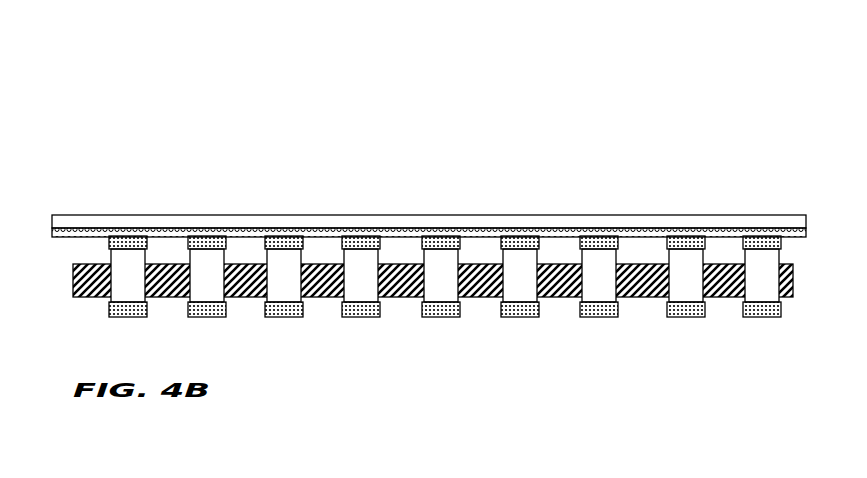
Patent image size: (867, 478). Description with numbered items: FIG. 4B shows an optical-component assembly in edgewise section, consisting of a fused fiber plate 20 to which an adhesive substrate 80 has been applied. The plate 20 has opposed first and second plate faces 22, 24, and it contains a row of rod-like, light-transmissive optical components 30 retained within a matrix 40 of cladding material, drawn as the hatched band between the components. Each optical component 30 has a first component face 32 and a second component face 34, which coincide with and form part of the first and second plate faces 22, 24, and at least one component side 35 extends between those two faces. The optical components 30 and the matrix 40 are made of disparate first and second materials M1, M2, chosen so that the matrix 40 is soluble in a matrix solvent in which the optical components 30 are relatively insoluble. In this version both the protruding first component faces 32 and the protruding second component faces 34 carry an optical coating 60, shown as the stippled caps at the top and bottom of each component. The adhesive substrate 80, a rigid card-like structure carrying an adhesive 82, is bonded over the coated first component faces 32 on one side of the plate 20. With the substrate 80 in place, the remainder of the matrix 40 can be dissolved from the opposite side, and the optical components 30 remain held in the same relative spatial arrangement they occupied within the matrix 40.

The fused fiber plate 20 is at (433, 268).
The first plate face 22 is at (506, 249).
The second plate face 24 is at (515, 312).
The optical component 30 is at (383, 265).
The first component face 32 is at (436, 241).
The second component face 34 is at (442, 312).
The component side 35 is at (423, 278).
The matrix 40 is at (713, 264).
The optical coating 60 is at (445, 268).
The adhesive substrate 80 is at (557, 223).
The adhesive 82 is at (52, 230).
The first material M1 is at (458, 173).
The second material M2 is at (702, 178).